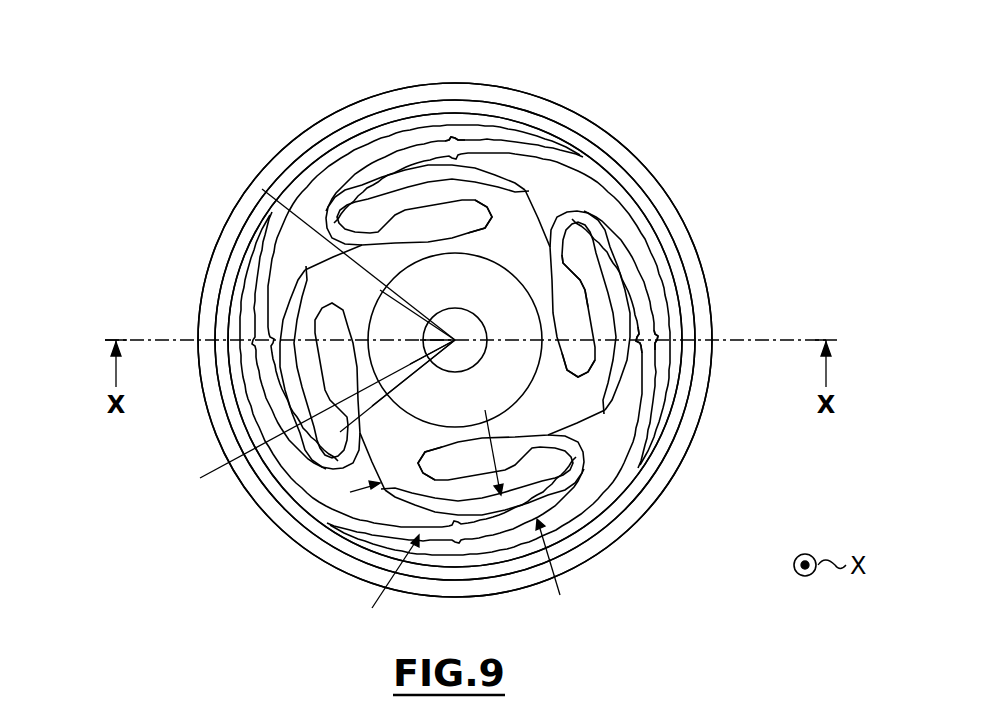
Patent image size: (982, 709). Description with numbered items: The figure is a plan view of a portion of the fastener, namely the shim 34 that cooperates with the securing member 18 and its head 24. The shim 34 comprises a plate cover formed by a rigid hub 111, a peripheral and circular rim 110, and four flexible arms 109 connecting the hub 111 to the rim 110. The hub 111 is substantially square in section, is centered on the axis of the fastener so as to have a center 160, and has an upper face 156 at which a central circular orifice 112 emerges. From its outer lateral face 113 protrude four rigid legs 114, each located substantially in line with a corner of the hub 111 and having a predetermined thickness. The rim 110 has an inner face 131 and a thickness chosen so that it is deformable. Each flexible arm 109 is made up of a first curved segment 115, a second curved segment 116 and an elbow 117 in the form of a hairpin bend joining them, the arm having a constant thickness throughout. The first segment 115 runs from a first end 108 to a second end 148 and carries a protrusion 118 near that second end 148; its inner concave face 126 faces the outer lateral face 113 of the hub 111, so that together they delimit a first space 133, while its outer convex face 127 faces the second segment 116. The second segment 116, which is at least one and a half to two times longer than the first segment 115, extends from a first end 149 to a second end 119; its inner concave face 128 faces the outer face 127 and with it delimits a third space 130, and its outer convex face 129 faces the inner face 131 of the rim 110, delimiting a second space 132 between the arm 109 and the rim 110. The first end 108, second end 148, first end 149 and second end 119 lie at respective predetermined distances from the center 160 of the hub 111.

The securing member 18 is at (740, 75).
The head 24 is at (685, 500).
The shim 34 is at (682, 155).
The first end 108 is at (325, 330).
The flexible arm 109 is at (335, 190).
The rim 110 is at (703, 222).
The hub 111 is at (393, 293).
The central circular orifice 112 is at (460, 312).
The outer lateral face 113 is at (462, 230).
The rigid leg 114 is at (517, 197).
The first curved segment 115 is at (468, 535).
The second curved segment 116 is at (590, 478).
The elbow 117 is at (640, 475).
The protrusion 118 is at (457, 155).
The second end 119 is at (300, 219).
The inner concave face 126 is at (607, 318).
The outer convex face 127 is at (648, 333).
The inner concave face 128 is at (632, 388).
The outer convex face 129 is at (660, 363).
The third space 130 is at (580, 303).
The inner face 131 is at (676, 264).
The second space 132 is at (582, 229).
The first space 133 is at (575, 357).
The second end 148 is at (335, 525).
The first end 149 is at (307, 417).
The upper face 156 is at (486, 214).
The center 160 is at (488, 340).